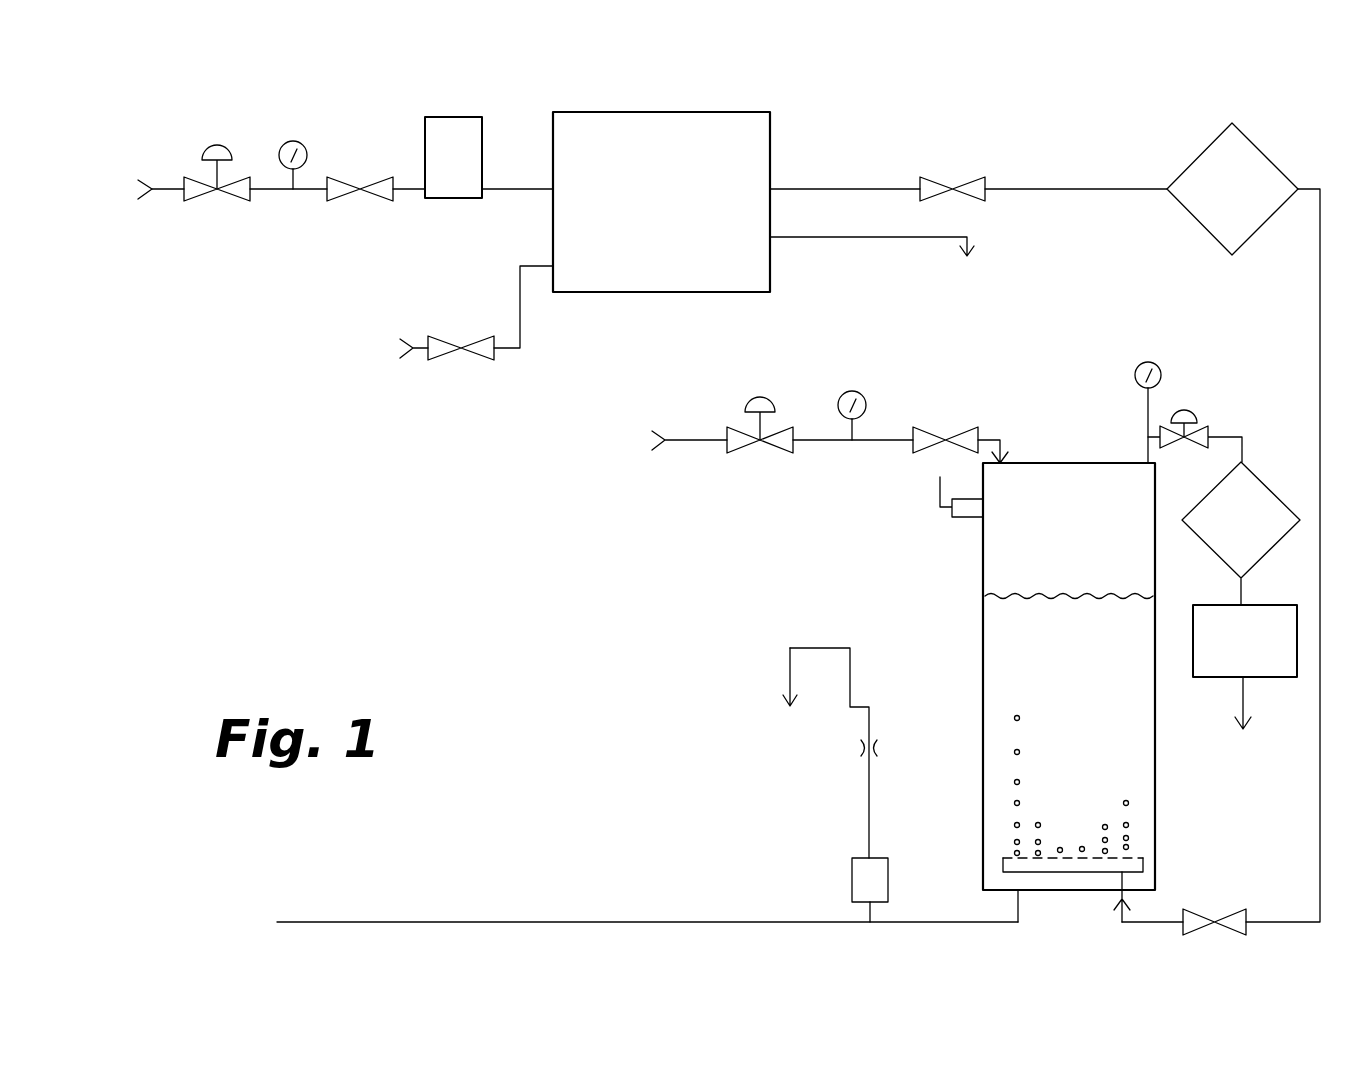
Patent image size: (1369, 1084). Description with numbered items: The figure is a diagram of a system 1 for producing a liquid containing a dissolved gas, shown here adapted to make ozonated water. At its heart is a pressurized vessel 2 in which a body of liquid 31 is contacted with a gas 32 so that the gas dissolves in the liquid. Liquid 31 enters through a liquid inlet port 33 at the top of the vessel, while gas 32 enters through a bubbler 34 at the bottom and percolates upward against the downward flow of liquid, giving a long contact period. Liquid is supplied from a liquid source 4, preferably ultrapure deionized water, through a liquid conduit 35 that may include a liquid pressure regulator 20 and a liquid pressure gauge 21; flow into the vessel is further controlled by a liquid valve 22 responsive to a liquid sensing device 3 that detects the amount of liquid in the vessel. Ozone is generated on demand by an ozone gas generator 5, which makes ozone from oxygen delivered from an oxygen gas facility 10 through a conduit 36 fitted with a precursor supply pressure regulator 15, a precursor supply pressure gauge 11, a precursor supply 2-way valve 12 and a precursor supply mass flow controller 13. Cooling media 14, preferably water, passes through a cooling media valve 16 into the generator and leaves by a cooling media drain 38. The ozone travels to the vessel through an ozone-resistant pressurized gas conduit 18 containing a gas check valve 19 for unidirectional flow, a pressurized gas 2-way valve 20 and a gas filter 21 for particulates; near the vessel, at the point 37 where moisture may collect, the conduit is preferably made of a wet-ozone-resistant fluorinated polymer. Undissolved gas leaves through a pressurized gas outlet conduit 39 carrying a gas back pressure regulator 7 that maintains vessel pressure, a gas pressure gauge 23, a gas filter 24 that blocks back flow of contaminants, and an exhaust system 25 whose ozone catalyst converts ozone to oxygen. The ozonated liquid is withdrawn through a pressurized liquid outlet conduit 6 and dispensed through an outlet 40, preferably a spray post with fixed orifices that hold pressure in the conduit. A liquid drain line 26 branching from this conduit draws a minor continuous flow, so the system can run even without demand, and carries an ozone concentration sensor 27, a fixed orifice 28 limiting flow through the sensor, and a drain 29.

The system 1 is at (243, 527).
The pressurized vessel 2 is at (1157, 612).
The liquid sensing device 3 is at (960, 518).
The liquid source 4 is at (656, 441).
The ozone gas generator 5 is at (648, 245).
The pressurized liquid outlet conduit 6 is at (1018, 908).
The gas back pressure regulator 7 is at (1200, 432).
The oxygen gas facility 10 is at (131, 192).
The precursor supply pressure gauge 11 is at (303, 146).
The precursor supply 2-way valve 12 is at (362, 187).
The precursor supply mass flow controller 13 is at (453, 157).
The cooling media 14 is at (400, 348).
The precursor supply pressure regulator 15 is at (226, 192).
The cooling media valve 16 is at (462, 352).
The pressurized gas conduit 18 is at (1320, 676).
The gas check valve 19 is at (965, 183).
The liquid pressure regulator 20 is at (748, 448).
The liquid pressure gauge 21 is at (860, 393).
The liquid valve 22 is at (948, 436).
The gas pressure gauge 23 is at (1139, 362).
The gas filter 24 is at (1230, 552).
The exhaust system 25 is at (1245, 684).
The liquid drain line 26 is at (790, 663).
The ozone concentration sensor 27 is at (852, 883).
The fixed orifice 28 is at (888, 750).
The drain 29 is at (784, 691).
The liquid 31 is at (1055, 592).
The gas 32 is at (1130, 802).
The liquid inlet port 33 is at (1003, 465).
The bubbler 34 is at (1076, 838).
The liquid conduit 35 is at (866, 442).
The conduit 36 is at (497, 196).
The point 37 is at (1300, 923).
The cooling media drain 38 is at (875, 263).
The pressurized gas outlet conduit 39 is at (1148, 455).
The outlet 40 is at (566, 936).